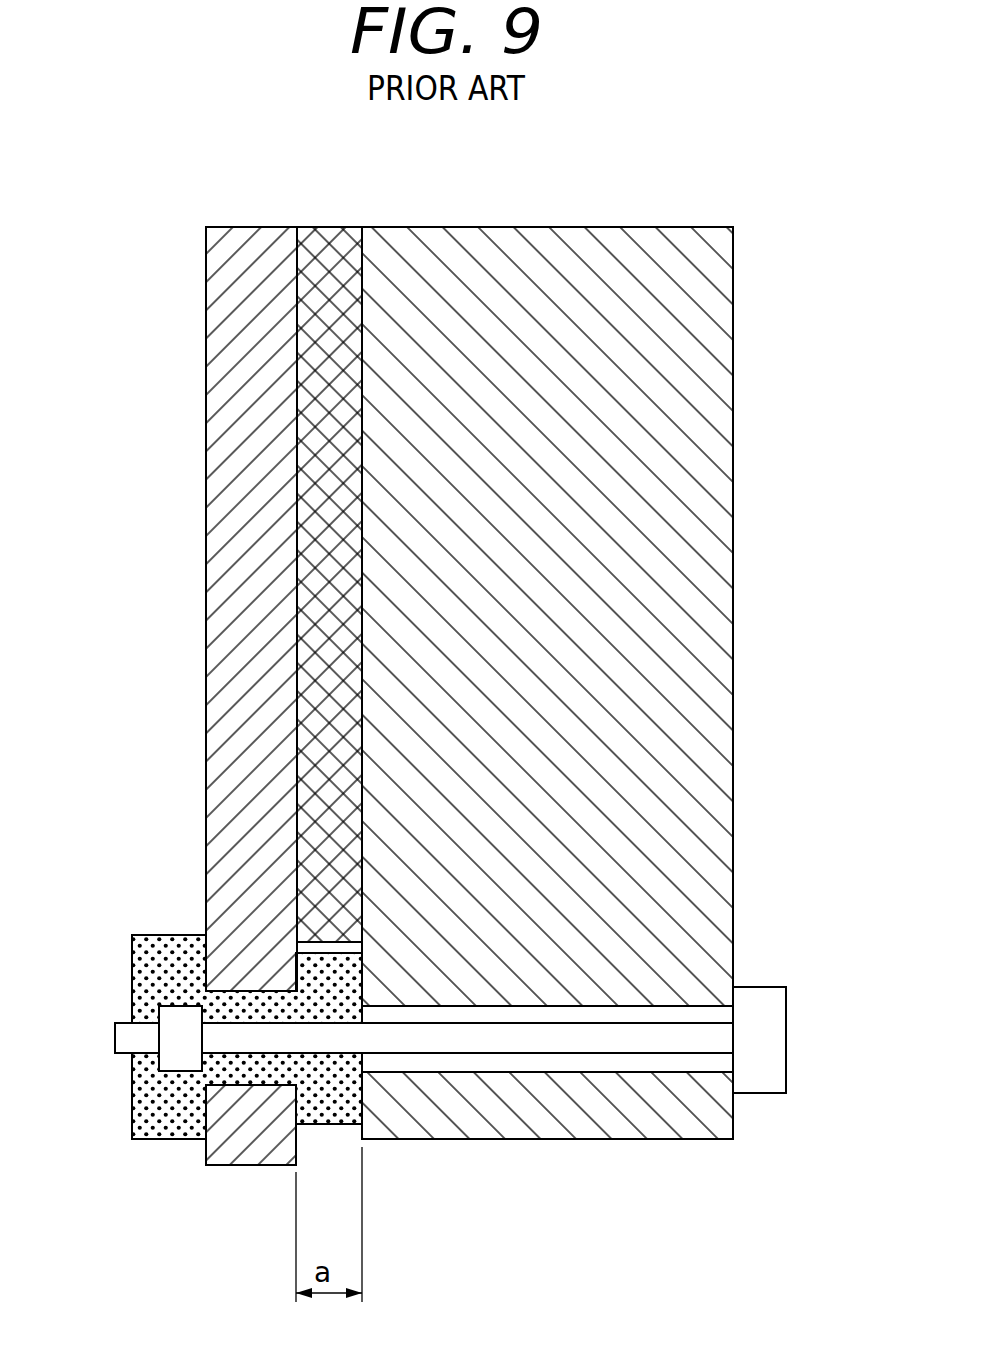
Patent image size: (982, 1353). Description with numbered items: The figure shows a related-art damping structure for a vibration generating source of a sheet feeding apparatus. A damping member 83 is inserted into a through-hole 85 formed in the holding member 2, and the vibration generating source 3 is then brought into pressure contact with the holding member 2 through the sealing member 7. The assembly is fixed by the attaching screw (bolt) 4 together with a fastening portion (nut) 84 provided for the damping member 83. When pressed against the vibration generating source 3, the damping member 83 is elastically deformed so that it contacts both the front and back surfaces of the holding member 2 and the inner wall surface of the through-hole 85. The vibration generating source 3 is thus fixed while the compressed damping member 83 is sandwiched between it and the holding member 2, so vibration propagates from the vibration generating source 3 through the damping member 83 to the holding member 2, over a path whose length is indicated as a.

The holding member 2 is at (225, 363).
The vibration generating source 3 is at (708, 547).
The attaching screw (bolt) 4 is at (765, 1042).
The sealing member 7 is at (328, 243).
The damping member 83 is at (155, 936).
The fastening portion (nut) 84 is at (179, 1056).
The through-hole 85 is at (257, 1087).